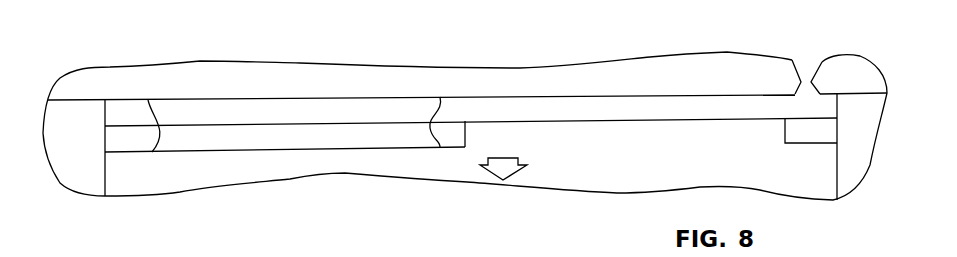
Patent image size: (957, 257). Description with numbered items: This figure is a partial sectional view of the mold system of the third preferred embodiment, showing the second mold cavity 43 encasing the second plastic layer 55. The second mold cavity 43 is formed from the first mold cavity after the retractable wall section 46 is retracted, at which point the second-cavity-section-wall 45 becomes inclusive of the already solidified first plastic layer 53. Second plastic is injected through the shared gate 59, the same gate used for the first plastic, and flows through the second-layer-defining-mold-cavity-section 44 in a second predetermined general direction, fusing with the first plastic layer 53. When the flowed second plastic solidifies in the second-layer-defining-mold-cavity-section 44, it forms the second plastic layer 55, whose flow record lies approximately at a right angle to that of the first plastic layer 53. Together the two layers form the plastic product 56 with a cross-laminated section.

The second mold cavity 43 is at (392, 112).
The second-layer-defining-mold-cavity-section 44 is at (303, 106).
The second-cavity-section-wall 45 is at (205, 133).
The retractable wall section 46 is at (657, 165).
The first plastic layer 53 is at (328, 142).
The second plastic layer 55 is at (413, 103).
The plastic product 56 is at (115, 112).
The shared gate 59 is at (807, 68).